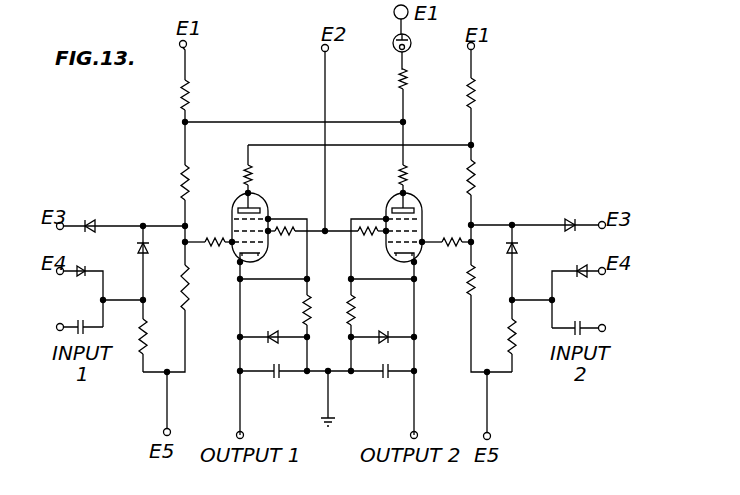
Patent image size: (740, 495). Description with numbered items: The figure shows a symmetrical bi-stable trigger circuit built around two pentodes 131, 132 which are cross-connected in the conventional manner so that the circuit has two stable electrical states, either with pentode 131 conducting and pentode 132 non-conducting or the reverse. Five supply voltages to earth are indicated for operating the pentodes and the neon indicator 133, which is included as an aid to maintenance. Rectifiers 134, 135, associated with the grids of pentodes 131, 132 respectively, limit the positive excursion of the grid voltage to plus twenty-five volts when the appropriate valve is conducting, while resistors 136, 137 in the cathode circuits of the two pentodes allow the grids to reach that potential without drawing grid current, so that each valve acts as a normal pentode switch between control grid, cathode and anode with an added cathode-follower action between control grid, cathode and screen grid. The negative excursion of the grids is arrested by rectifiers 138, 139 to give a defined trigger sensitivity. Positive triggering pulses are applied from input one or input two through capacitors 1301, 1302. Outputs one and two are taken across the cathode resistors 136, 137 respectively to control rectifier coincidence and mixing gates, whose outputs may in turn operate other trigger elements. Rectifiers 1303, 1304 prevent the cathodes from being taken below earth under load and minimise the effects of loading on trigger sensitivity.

The pentode 131 is at (237, 223).
The pentode 132 is at (391, 223).
The neon indicator 133 is at (384, 47).
The rectifier 134 is at (94, 240).
The rectifier 135 is at (568, 239).
The cathode resistor 136 is at (290, 325).
The cathode resistor 137 is at (372, 325).
The rectifier 138 is at (162, 263).
The rectifier 139 is at (496, 262).
The capacitor 1301 is at (76, 316).
The capacitor 1302 is at (579, 317).
The rectifier 1303 is at (273, 354).
The rectifier 1304 is at (382, 354).